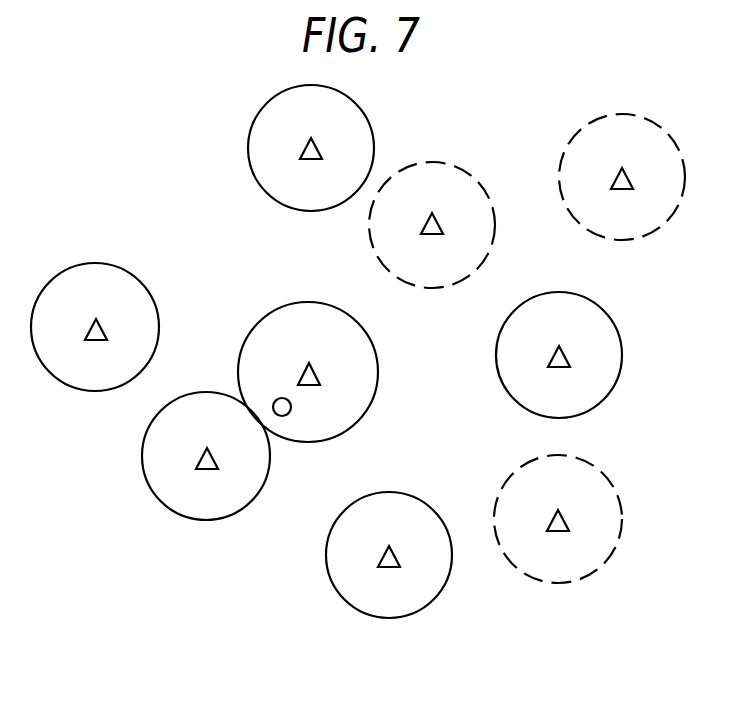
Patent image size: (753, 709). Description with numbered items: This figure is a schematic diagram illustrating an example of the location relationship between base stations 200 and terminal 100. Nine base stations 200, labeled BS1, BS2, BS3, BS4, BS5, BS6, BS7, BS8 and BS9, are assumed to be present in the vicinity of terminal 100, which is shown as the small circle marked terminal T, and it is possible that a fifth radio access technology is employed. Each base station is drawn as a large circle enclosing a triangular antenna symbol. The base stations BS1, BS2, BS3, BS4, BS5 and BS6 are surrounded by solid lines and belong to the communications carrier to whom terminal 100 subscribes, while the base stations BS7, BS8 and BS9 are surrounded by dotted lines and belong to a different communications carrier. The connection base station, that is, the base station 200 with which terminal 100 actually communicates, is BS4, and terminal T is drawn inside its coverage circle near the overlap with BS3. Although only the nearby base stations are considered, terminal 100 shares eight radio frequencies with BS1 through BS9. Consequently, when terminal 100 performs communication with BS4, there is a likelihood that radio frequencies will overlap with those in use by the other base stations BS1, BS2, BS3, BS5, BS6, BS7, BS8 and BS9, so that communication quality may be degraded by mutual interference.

The terminal 100 is at (299, 450).
The base station 200 is at (320, 378).
The terminal T is at (294, 412).
The base station BS1 is at (95, 327).
The base station BS2 is at (311, 148).
The base station BS3 is at (206, 456).
The base station BS4 is at (308, 372).
The base station BS5 is at (559, 355).
The base station BS6 is at (389, 555).
The base station BS7 is at (432, 225).
The base station BS8 is at (558, 519).
The base station BS9 is at (622, 177).